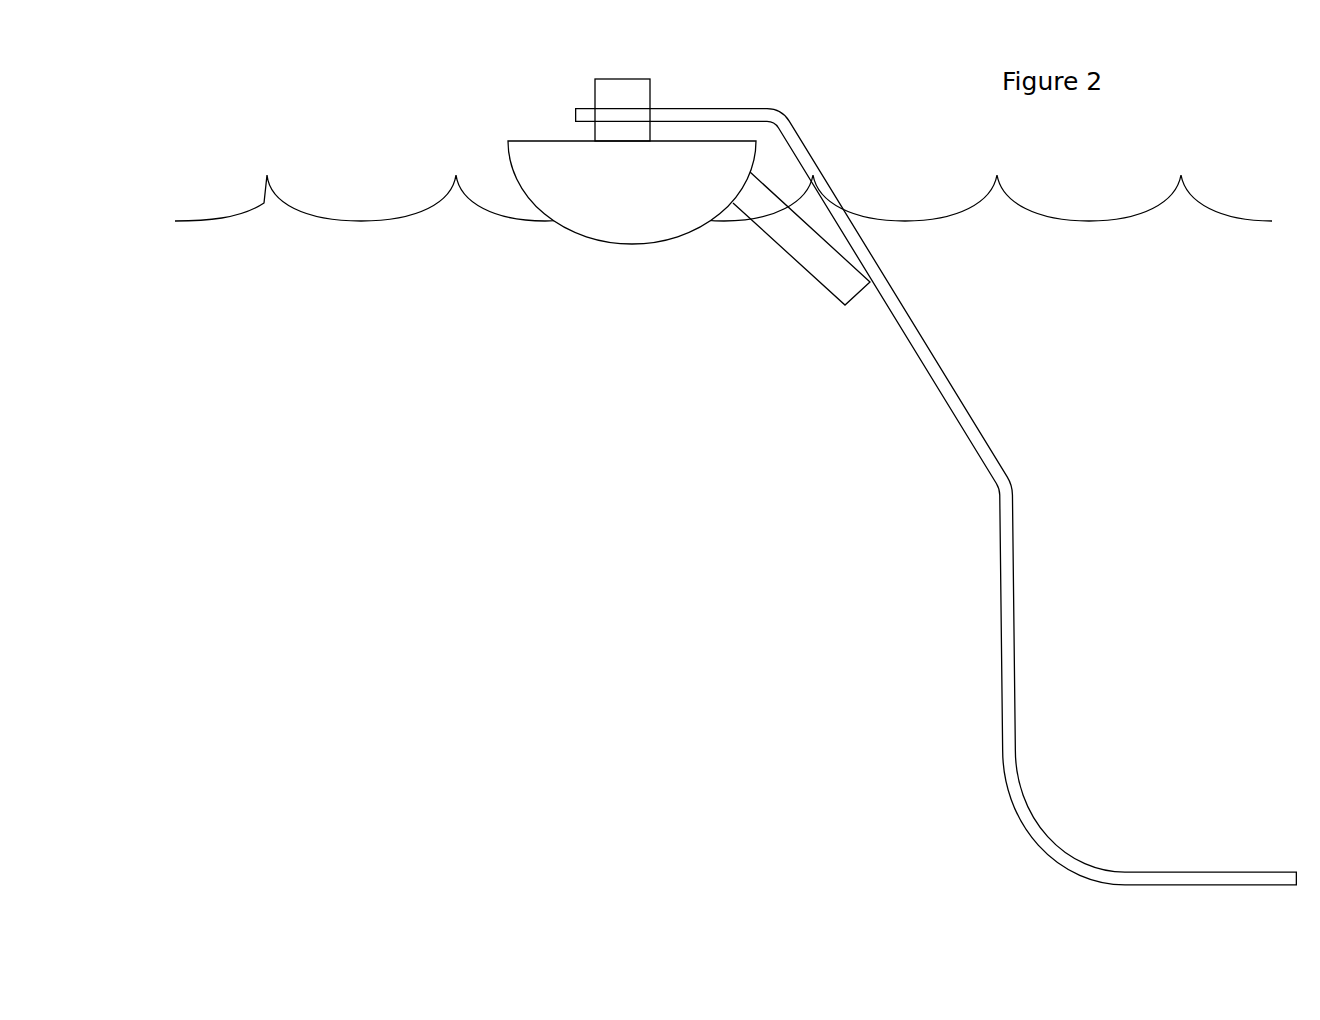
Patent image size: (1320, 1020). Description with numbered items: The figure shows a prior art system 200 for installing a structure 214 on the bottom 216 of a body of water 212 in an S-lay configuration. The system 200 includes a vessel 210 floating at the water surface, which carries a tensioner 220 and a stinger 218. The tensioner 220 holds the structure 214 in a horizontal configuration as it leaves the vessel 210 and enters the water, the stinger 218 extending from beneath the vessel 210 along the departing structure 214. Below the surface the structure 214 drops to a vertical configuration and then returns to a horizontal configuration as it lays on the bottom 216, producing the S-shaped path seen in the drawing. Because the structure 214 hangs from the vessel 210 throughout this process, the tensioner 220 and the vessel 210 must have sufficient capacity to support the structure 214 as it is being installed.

The prior art system 200 is at (350, 95).
The vessel 210 is at (530, 141).
The body of water 212 is at (1101, 306).
The structure 214 is at (908, 327).
The bottom 216 is at (368, 893).
The stinger 218 is at (805, 247).
The tensioner 220 is at (650, 79).